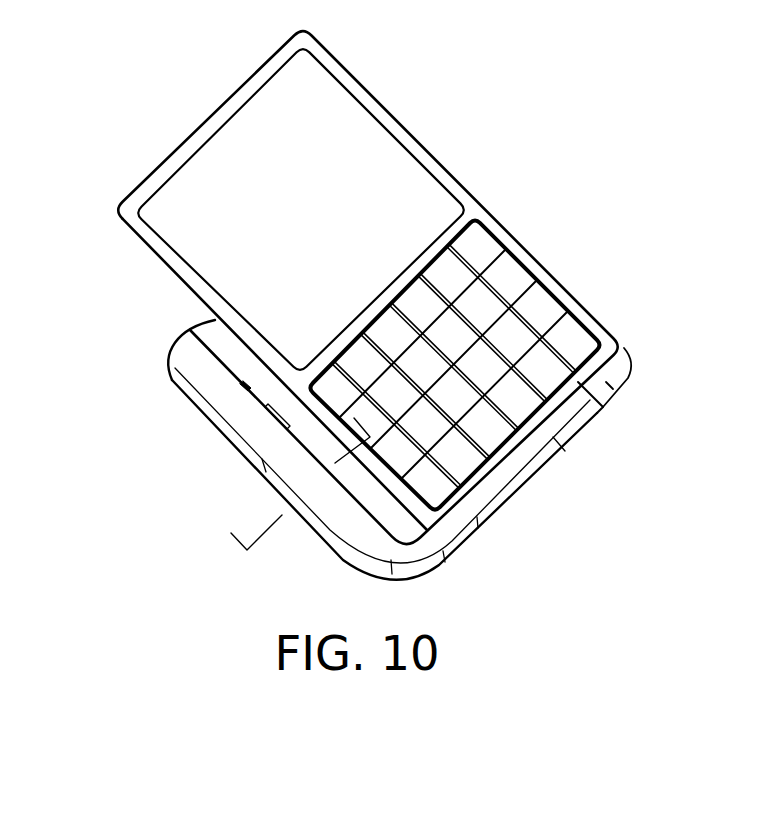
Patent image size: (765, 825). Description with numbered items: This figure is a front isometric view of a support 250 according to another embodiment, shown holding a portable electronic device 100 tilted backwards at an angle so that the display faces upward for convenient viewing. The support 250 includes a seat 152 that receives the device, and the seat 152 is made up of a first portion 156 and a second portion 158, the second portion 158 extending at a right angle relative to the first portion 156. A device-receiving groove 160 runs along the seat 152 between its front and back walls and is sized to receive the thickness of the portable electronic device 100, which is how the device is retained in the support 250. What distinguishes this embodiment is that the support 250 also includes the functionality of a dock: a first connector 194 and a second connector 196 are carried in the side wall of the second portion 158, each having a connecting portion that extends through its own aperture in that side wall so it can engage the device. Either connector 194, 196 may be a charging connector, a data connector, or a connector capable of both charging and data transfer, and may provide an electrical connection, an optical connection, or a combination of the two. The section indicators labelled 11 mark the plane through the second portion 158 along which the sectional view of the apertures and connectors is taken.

The portable electronic device 100 is at (434, 159).
The device-receiving groove 160 is at (213, 318).
The first connector 194 is at (241, 383).
The second connector 196 is at (273, 412).
The support 250 is at (234, 454).
The second portion 158 is at (270, 481).
The seat 152 is at (556, 461).
The first portion 156 is at (515, 493).
The section line 11- 11 is at (351, 414).